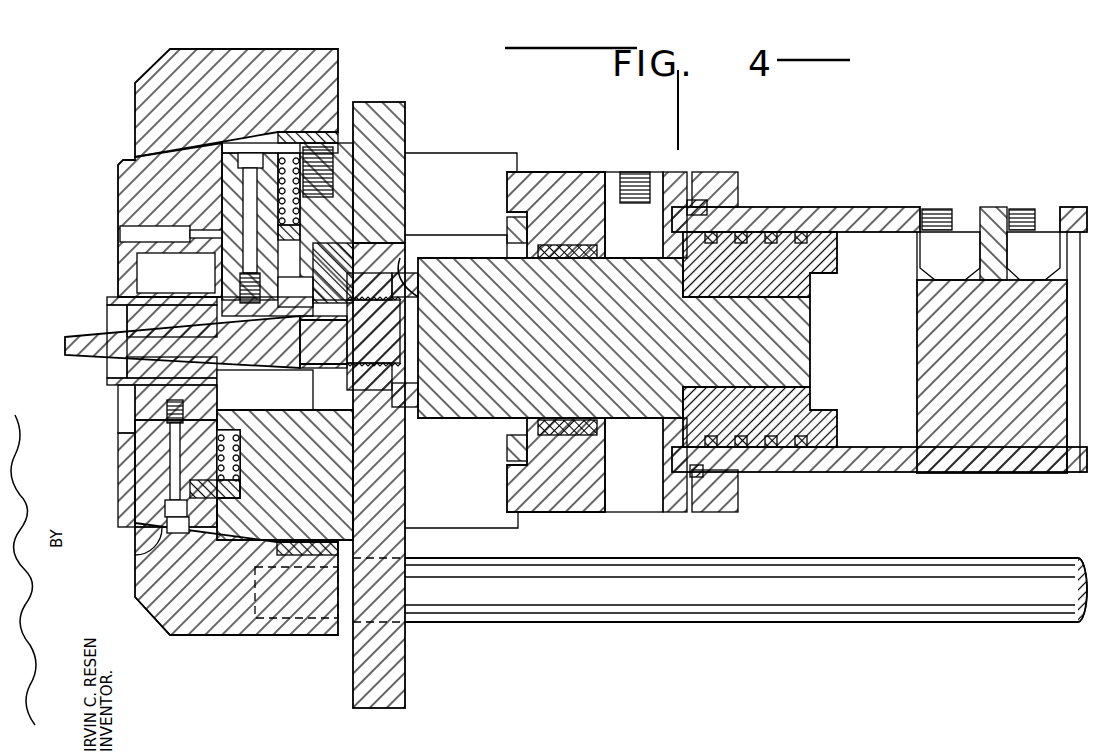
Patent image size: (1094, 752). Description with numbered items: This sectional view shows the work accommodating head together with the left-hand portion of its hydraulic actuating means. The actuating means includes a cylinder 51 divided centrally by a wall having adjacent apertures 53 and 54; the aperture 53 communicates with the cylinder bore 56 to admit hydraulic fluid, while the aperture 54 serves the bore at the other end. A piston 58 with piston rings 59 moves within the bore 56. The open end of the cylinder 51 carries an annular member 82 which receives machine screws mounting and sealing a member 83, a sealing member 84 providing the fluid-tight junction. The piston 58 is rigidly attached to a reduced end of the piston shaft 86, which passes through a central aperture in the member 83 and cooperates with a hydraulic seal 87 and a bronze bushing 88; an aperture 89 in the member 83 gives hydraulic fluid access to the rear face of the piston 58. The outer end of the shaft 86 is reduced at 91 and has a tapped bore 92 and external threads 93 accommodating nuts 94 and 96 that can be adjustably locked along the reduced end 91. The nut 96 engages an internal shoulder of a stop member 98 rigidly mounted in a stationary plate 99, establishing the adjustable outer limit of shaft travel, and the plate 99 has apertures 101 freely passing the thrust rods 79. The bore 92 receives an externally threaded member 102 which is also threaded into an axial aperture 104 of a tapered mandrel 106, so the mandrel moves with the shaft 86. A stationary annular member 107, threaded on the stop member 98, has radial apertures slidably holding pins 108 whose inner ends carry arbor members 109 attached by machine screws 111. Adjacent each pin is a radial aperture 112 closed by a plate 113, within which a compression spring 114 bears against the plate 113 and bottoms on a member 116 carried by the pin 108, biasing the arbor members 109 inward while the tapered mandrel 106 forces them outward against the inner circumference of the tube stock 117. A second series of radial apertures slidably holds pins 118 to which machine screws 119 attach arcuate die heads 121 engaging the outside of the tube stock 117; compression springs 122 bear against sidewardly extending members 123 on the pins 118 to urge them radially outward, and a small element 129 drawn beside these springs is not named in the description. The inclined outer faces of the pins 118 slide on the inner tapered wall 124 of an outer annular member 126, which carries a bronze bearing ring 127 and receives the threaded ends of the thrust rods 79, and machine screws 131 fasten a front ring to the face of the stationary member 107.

The cylinder 51 is at (843, 210).
The aperture 53 is at (957, 243).
The aperture 54 is at (1028, 247).
The cylinder bore 56 is at (880, 313).
The piston 58 is at (823, 447).
The piston rings 59 is at (807, 447).
The thrust rods 79 is at (702, 607).
The annular member 82 is at (713, 497).
The member 83 is at (615, 485).
The sealing member 84 is at (657, 480).
The piston shaft 86 is at (573, 315).
The hydraulic seal 87 is at (565, 437).
The bronze bushing 88 is at (515, 447).
The aperture 89 is at (632, 213).
The reduced end 91 is at (343, 373).
The tapped bore 92 is at (397, 342).
The external threads 93 is at (455, 290).
The nut 94 is at (422, 280).
The nut 96 is at (405, 247).
The stop member 98 is at (393, 435).
The stationary plate 99 is at (397, 670).
The apertures 101 is at (410, 645).
The externally threaded member 102 is at (270, 367).
The axial aperture 104 is at (297, 323).
The tapered mandrel 106 is at (103, 330).
The stationary annular member 107 is at (170, 197).
The pin 108 is at (228, 188).
The arbor members 109 is at (123, 312).
The machine screws 111 is at (248, 160).
The radial aperture 112 is at (343, 143).
The plates 113 is at (300, 143).
The compression springs 114 is at (375, 140).
The members 116 is at (395, 150).
The tube stock 117 is at (155, 293).
The pins 118 is at (147, 428).
The machine screws 119 is at (173, 453).
The die heads 121 is at (143, 395).
The compression springs 122 is at (240, 443).
The sidewardly extending members 123 is at (157, 603).
The inner tapered wall 124 is at (138, 557).
The outer annular member 126 is at (190, 603).
The bronze bearing ring 127 is at (283, 547).
The plug 129 is at (118, 482).
The machine screws 131 is at (118, 233).